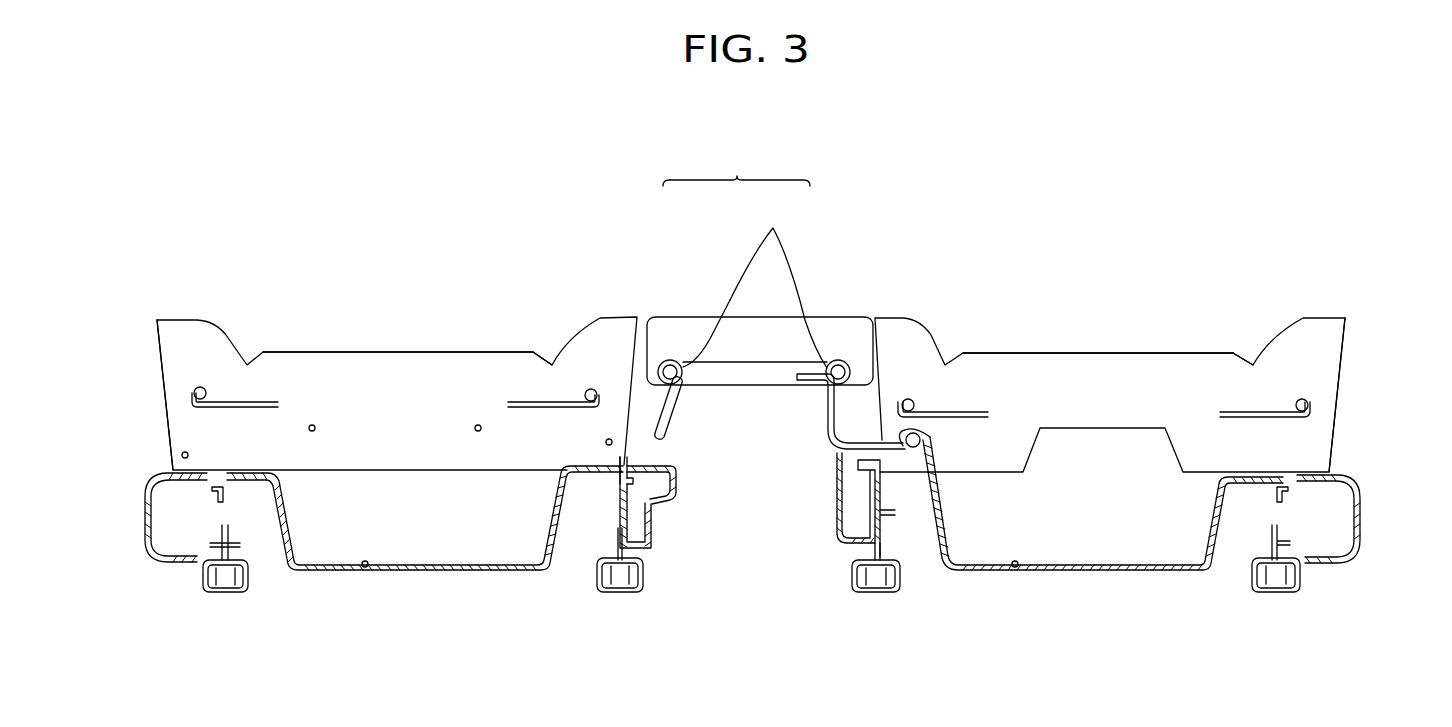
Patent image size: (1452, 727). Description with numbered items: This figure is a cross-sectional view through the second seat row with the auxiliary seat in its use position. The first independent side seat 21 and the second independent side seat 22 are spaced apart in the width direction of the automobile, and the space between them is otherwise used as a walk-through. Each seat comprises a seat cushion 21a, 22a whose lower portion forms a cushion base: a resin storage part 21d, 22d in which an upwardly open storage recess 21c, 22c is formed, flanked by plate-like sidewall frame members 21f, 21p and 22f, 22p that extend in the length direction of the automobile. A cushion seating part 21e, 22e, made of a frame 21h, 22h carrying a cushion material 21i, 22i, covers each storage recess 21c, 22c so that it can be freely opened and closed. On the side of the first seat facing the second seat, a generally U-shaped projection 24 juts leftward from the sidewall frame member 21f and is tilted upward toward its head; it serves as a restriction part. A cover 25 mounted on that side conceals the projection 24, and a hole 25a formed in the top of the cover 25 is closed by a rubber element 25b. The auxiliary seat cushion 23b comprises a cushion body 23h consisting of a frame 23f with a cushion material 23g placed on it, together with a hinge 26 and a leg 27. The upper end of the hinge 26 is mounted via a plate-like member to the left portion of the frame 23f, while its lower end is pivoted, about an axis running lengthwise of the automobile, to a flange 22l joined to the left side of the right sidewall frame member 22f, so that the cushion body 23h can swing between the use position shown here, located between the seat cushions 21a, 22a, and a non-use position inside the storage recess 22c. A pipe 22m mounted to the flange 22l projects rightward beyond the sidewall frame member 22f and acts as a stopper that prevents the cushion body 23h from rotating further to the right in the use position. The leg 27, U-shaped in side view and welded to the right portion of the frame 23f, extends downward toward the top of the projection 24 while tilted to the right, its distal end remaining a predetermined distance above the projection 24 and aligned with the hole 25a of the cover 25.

The first independent side seat 21 is at (185, 310).
The seat cushion 21a is at (410, 344).
The storage recess 21c is at (363, 568).
The storage part 21d is at (450, 571).
The cushion seating part 21e is at (490, 352).
The sidewall frame member 21f is at (618, 492).
The frame 21h is at (204, 387).
The cushion material 21i is at (172, 395).
The sidewall frame member 21p is at (231, 537).
The second independent side seat 22 is at (1336, 312).
The seat cushion 22a is at (1055, 345).
The storage recess 22c is at (1010, 568).
The storage part 22d is at (1092, 573).
The cushion seating part 22e is at (1138, 353).
The right sidewall frame member 22f is at (845, 528).
The frame 22h is at (908, 398).
The cushion material 22i is at (1330, 392).
The flange 22l is at (893, 520).
The pipe 22m is at (830, 452).
The sidewall frame member 22p is at (1272, 533).
The auxiliary seat cushion 23b is at (829, 312).
The frame 23f is at (778, 275).
The cushion material 23g is at (695, 327).
The cushion body 23h is at (736, 159).
The projection 24 is at (651, 532).
The cover 25 is at (674, 496).
The hole 25a is at (672, 462).
The rubber element 25b is at (633, 460).
The hinge 26 is at (828, 407).
The leg 27 is at (676, 408).